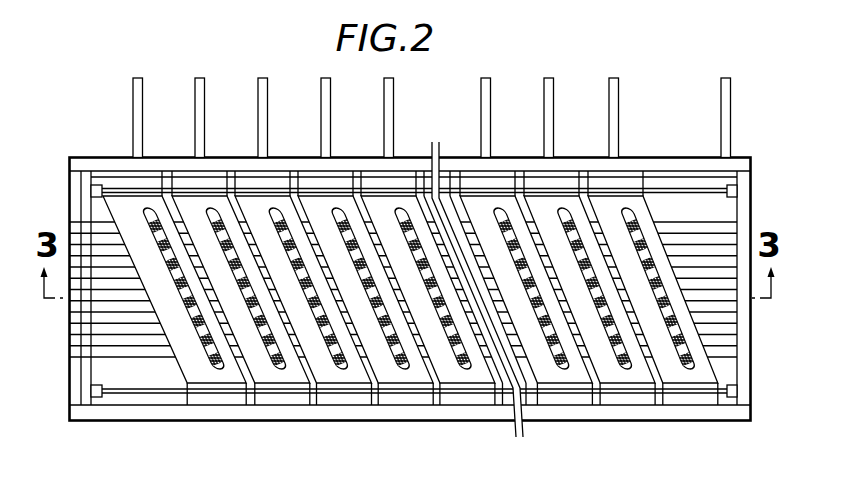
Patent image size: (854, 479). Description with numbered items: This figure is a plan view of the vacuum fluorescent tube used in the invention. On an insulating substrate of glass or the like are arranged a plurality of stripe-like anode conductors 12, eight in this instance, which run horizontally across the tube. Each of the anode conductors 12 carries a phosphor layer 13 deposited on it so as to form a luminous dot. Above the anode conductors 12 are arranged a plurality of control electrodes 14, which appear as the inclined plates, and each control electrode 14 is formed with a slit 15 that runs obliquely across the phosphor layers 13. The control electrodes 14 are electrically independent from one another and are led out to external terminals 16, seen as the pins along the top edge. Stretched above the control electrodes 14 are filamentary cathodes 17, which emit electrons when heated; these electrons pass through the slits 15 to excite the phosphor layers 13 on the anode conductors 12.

The anode conductors 12 is at (122, 338).
The phosphor layer 13 is at (142, 207).
The control electrodes 14 is at (223, 380).
The slit 15 is at (333, 367).
The external terminals 16 is at (143, 104).
The filamentary cathodes 17 is at (634, 396).